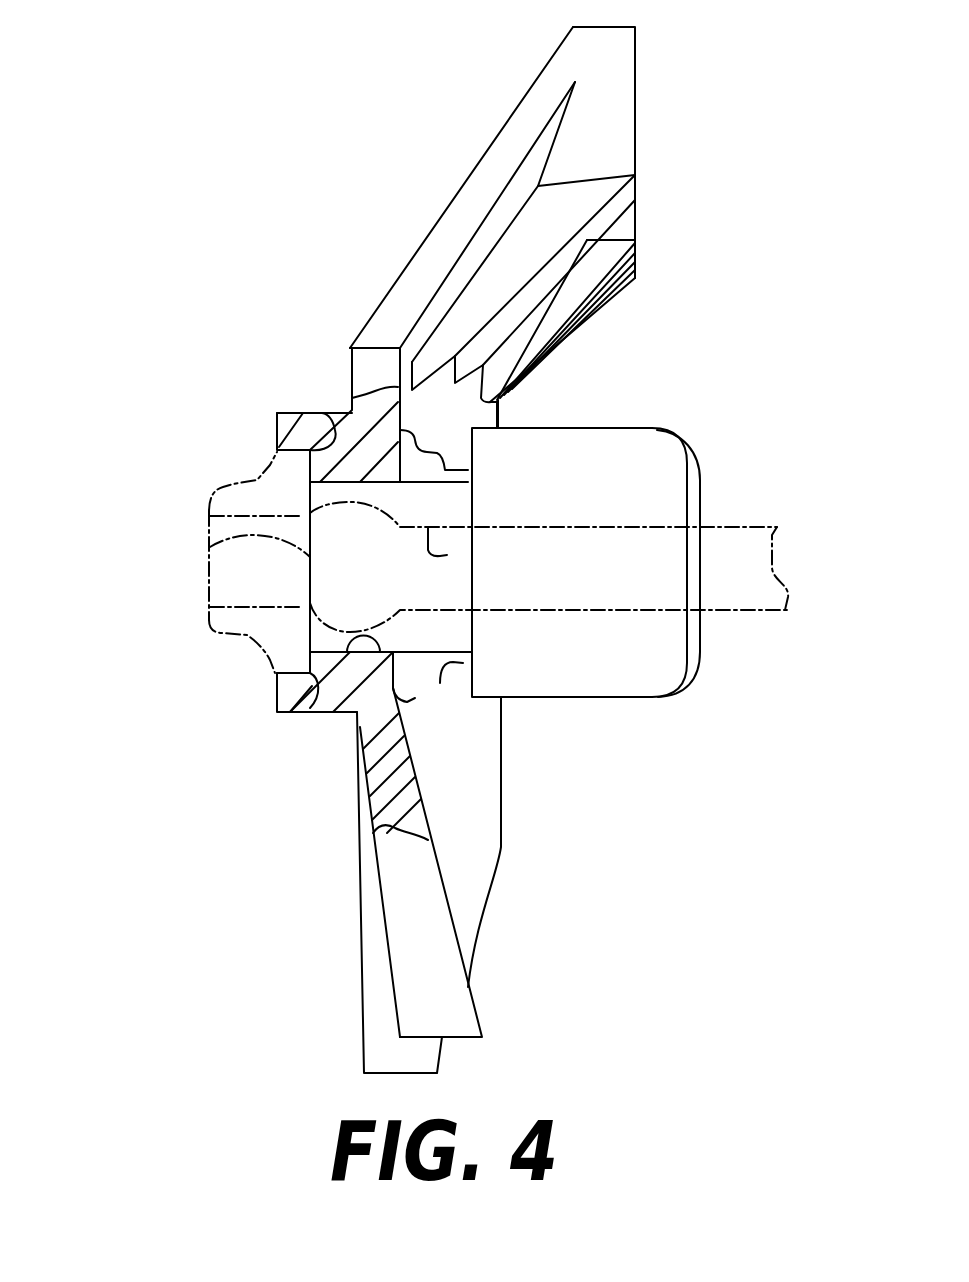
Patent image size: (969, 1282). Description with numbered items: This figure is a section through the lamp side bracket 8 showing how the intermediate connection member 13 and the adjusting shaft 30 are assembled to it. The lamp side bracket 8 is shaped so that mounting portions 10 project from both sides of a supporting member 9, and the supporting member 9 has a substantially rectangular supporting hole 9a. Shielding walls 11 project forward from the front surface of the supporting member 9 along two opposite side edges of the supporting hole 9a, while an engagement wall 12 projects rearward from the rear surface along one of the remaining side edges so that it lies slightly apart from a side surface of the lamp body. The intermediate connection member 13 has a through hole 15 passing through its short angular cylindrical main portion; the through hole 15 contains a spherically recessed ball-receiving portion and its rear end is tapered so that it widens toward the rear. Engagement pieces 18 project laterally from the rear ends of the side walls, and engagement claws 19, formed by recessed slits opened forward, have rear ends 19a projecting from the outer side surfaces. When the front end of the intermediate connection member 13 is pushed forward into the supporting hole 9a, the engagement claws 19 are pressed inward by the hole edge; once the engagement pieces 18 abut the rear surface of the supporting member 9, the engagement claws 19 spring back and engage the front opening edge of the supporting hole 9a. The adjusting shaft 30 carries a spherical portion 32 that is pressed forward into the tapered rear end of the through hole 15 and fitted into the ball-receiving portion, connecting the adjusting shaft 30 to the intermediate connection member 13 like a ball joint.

The lamp side bracket 8 is at (478, 155).
The supporting member 9 is at (338, 410).
The supporting hole 9a is at (347, 680).
The mounting portion 10 is at (617, 145).
The shielding wall 11 is at (278, 413).
The engagement wall 12 is at (673, 487).
The intermediate connection member 13 is at (209, 507).
The through hole 15 is at (457, 553).
The engagement piece 18 is at (433, 437).
The engagement claw 19 is at (270, 462).
The rear end 19a is at (333, 413).
The adjusting shaft 30 is at (737, 612).
The spherical portion 32 is at (215, 542).